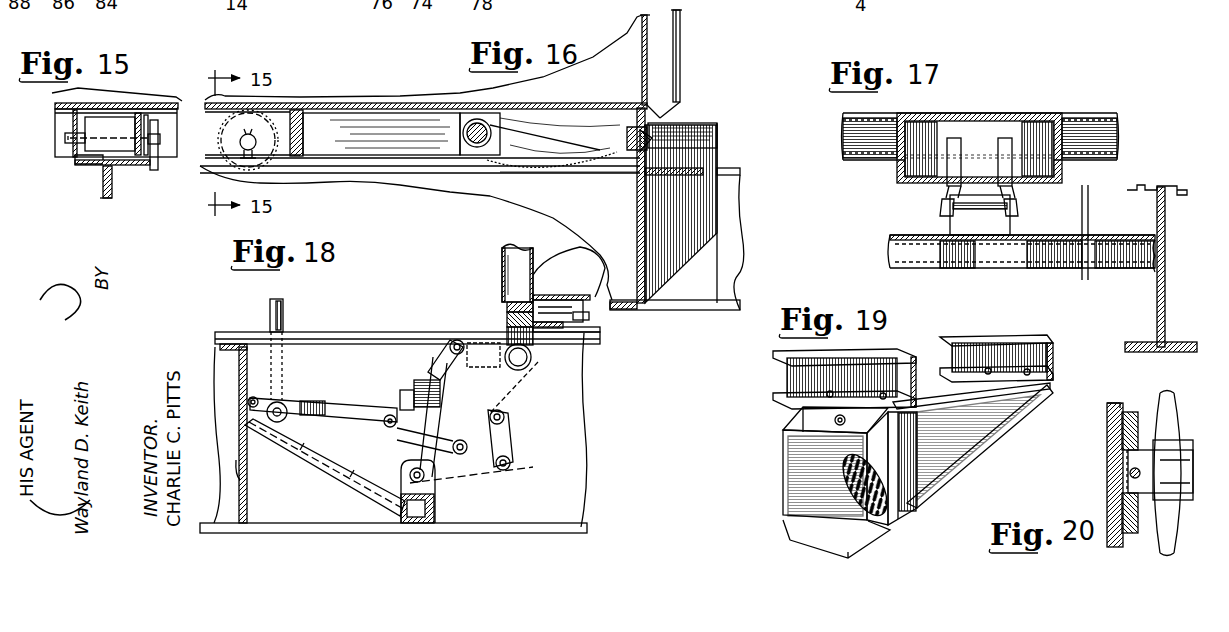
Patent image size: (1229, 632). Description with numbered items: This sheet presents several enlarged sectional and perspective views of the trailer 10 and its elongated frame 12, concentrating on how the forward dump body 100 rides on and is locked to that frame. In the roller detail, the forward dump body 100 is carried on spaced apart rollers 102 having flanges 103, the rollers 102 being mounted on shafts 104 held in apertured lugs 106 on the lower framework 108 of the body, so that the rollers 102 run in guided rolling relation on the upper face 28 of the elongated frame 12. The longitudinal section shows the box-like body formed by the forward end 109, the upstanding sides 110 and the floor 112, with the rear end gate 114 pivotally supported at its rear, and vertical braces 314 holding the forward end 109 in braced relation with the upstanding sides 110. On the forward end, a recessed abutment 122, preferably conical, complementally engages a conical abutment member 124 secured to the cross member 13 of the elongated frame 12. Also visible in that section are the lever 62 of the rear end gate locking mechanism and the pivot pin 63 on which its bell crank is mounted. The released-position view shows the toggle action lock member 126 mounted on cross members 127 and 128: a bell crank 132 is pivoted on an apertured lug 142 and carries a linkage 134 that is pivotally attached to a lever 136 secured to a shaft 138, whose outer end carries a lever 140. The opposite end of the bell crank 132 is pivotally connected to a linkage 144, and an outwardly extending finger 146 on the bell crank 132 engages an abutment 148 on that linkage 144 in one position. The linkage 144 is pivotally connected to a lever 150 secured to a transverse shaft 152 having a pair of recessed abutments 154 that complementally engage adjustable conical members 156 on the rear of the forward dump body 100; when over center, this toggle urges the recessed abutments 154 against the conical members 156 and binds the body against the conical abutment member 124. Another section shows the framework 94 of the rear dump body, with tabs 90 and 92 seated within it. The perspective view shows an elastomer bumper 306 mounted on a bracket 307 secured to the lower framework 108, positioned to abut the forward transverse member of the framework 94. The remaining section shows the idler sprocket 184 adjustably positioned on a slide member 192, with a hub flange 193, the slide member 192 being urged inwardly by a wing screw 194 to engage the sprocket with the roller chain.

In FIG. 15, the trailer 10 is at (102, 199).
In FIG. 16, the trailer 10 is at (767, 143).
In FIG. 17, the trailer 10 is at (1168, 262).
In FIG. 18, the trailer 10 is at (584, 450).
In FIG. 20, the trailer 10 is at (1107, 460).
In FIG. 15, the elongated frame 12 is at (103, 183).
In FIG. 16, the elongated frame 12 is at (738, 233).
In FIG. 17, the elongated frame 12 is at (1167, 185).
In FIG. 18, the elongated frame 12 is at (585, 373).
In FIG. 20, the elongated frame 12 is at (1107, 422).
In FIG. 16, the cross member 13 is at (637, 227).
In FIG. 15, the upper face 28 is at (78, 162).
In FIG. 16, the upper face 28 is at (490, 163).
In FIG. 17, the upper face 28 is at (1140, 186).
In FIG. 18, the upper face 28 is at (432, 313).
In FIG. 16, the lever 62 is at (550, 140).
In FIG. 16, the pivot pin 63 is at (490, 128).
In FIG. 17, the tab 90 is at (940, 213).
In FIG. 17, the lug 92 is at (945, 188).
In FIG. 17, the framework 94 is at (1120, 138).
In FIG. 15, the forward dump body 100 is at (190, 93).
In FIG. 16, the forward dump body 100 is at (658, 57).
In FIG. 18, the forward dump body 100 is at (501, 248).
In FIG. 15, the rollers 102 is at (120, 120).
In FIG. 16, the rollers 102 is at (262, 112).
In FIG. 15, the flanges 103 is at (80, 108).
In FIG. 16, the flanges 103 is at (300, 110).
In FIG. 15, the shafts 104 is at (68, 141).
In FIG. 16, the shafts 104 is at (250, 141).
In FIG. 15, the apertured lugs 106 is at (76, 124).
In FIG. 16, the apertured lugs 106 is at (252, 120).
In FIG. 15, the lower framework 108 is at (151, 166).
In FIG. 16, the lower framework 108 is at (428, 118).
In FIG. 19, the lower framework 108 is at (978, 343).
In FIG. 16, the forward end 109 is at (650, 21).
In FIG. 16, the upstanding sides 110 is at (618, 48).
In FIG. 18, the upstanding sides 110 is at (560, 268).
In FIG. 15, the floor 112 is at (112, 100).
In FIG. 16, the floor 112 is at (412, 106).
In FIG. 18, the floor 112 is at (548, 298).
In FIG. 18, the rear end gate 114 is at (513, 266).
In FIG. 16, the recessed abutment 122 is at (642, 117).
In FIG. 16, the conical abutment member 124 is at (650, 137).
In FIG. 18, the toggle action lock member 126 is at (413, 382).
In FIG. 18, the cross member 127 is at (400, 507).
In FIG. 18, the cross member 128 is at (242, 480).
In FIG. 18, the bell crank 132 is at (437, 416).
In FIG. 18, the linkage 134 is at (303, 400).
In FIG. 18, the lever 136 is at (255, 395).
In FIG. 18, the shaft 138 is at (276, 425).
In FIG. 18, the lever 140 is at (285, 321).
In FIG. 18, the apertured lug 142 is at (431, 483).
In FIG. 18, the linkage 144 is at (508, 318).
In FIG. 18, the outwardly extending finger 146 is at (440, 374).
In FIG. 18, the abutment 148 is at (433, 373).
In FIG. 18, the lever 150 is at (468, 345).
In FIG. 18, the shaft 152 is at (532, 358).
In FIG. 18, the recessed abutments 154 is at (508, 304).
In FIG. 18, the adjustable conical members 156 is at (597, 331).
In FIG. 20, the idler sprocket 184 is at (1172, 422).
In FIG. 20, the slide member 192 is at (1133, 380).
In FIG. 20, the hub flange 193 is at (1130, 512).
In FIG. 20, the wing screw 194 is at (1099, 473).
In FIG. 19, the elastomer bumpers 306 is at (800, 458).
In FIG. 19, the bracket 307 is at (900, 497).
In FIG. 16, the vertical braces 314 is at (672, 37).